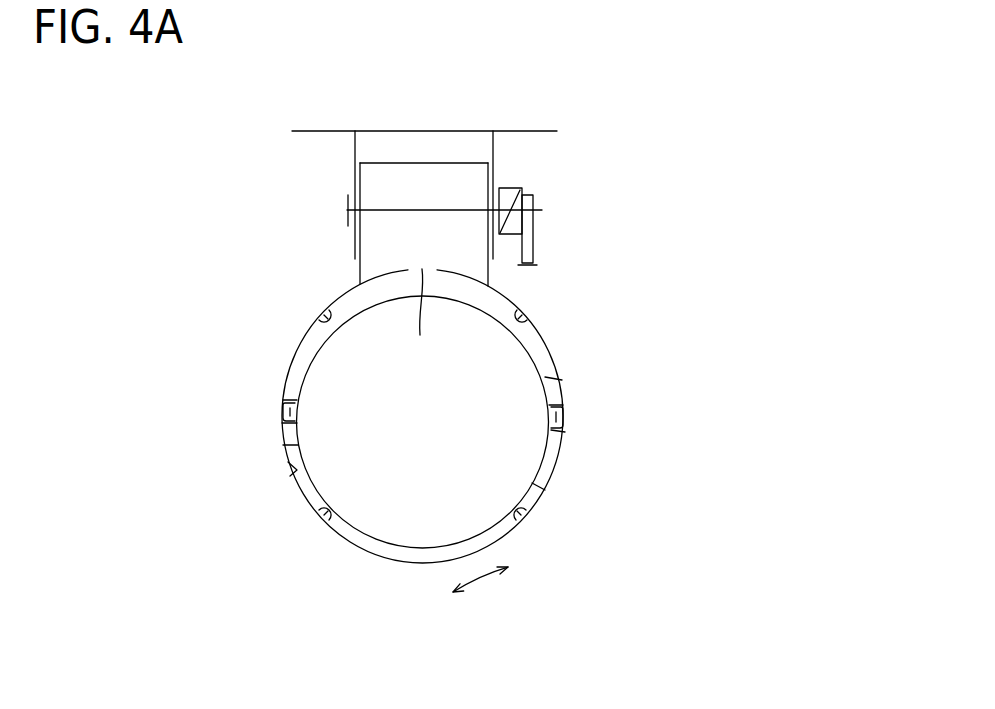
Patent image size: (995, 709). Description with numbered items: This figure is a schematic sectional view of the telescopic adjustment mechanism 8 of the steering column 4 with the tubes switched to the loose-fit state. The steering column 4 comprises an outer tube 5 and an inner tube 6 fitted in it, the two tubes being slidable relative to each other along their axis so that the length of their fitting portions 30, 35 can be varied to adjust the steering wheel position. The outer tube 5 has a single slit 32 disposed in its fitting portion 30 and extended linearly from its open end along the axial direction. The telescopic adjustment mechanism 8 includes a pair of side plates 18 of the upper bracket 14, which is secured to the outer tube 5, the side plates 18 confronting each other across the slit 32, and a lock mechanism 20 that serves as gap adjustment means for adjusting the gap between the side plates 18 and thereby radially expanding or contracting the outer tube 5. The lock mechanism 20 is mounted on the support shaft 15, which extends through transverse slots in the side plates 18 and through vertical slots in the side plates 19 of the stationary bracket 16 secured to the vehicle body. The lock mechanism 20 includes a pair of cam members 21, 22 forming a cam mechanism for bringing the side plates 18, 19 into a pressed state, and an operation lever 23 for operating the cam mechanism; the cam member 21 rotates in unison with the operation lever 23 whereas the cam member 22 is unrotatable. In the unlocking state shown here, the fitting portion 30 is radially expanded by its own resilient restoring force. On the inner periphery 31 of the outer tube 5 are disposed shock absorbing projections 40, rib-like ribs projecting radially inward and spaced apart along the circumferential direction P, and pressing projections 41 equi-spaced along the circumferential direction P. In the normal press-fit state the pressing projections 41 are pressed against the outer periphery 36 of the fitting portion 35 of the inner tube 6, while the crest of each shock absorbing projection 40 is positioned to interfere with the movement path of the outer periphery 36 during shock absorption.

The steering column 4 is at (485, 416).
The outer tube 5 is at (550, 347).
The inner tube 6 is at (547, 380).
The telescopic adjustment mechanism 8 is at (662, 162).
The upper bracket 14 is at (457, 163).
The support shaft 15 is at (422, 210).
The stationary bracket 16 is at (525, 130).
The side plates 18 is at (360, 278).
The side plates 19 is at (355, 145).
The lock mechanism 20 is at (594, 209).
The cam member 21 is at (510, 187).
The cam member 22 is at (513, 225).
The operation lever 23 is at (569, 242).
The fitting portion 30 is at (558, 458).
The inner periphery 31 is at (297, 473).
The slit 32 is at (419, 320).
The fitting portion 35 is at (532, 487).
The outer periphery 36 is at (285, 443).
The shock absorbing projection 40 is at (285, 397).
The pressing projections 41 is at (323, 313).
The circumferential direction P is at (483, 582).